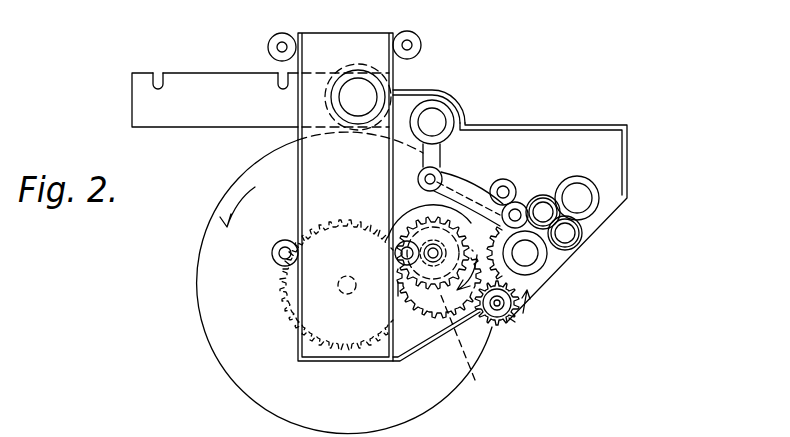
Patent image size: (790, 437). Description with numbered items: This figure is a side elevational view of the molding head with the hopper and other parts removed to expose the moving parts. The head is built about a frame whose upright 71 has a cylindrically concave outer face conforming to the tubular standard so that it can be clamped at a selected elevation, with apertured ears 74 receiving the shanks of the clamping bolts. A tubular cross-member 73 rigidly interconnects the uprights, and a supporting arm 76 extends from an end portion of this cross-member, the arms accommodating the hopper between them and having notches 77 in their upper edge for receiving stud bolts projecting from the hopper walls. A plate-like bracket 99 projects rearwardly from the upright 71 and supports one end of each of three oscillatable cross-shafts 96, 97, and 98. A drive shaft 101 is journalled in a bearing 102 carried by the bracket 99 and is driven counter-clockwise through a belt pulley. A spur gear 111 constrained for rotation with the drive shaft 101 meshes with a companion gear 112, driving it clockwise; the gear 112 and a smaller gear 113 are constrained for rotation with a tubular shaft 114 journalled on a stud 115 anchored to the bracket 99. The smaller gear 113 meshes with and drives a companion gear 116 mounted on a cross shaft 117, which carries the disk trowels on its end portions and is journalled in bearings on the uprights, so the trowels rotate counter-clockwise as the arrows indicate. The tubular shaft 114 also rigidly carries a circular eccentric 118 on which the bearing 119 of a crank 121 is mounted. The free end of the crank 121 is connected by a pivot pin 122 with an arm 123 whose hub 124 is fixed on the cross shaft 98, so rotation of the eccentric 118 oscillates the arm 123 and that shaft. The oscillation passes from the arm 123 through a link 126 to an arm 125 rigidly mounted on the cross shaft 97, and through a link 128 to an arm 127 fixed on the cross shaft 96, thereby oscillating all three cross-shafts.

The upright 71 is at (315, 162).
The tubular cross-member 73 is at (361, 75).
The apertured ears 74 is at (283, 33).
The supporting arms 76 is at (172, 118).
The notches 77 is at (157, 72).
The cross-shaft 96 is at (433, 112).
The cross-shaft 97 is at (585, 200).
The cross-shaft 98 is at (535, 256).
The plate-like bracket 99 is at (570, 140).
The drive shaft 101 is at (512, 311).
The bearing 102 is at (504, 322).
The spur gear 111 is at (515, 322).
The companion gear 112 is at (438, 312).
The smaller gear 113 is at (400, 302).
The tubular shaft 114 is at (476, 378).
The stud 115 is at (428, 250).
The companion gear 116 is at (322, 356).
The cross shaft 117 is at (282, 318).
The circular eccentric 118 is at (428, 206).
The bearing 119 is at (468, 228).
The crank 121 is at (503, 205).
The pivot pin 122 is at (506, 180).
The arm 123 is at (530, 203).
The hub 124 is at (508, 288).
The arm 125 is at (582, 231).
The link 126 is at (547, 257).
The arm 127 is at (465, 120).
The link 128 is at (456, 173).